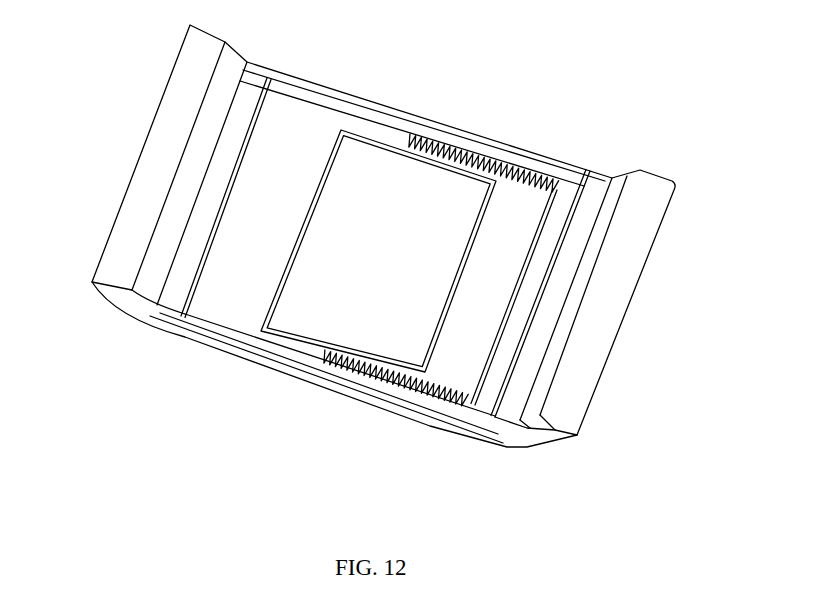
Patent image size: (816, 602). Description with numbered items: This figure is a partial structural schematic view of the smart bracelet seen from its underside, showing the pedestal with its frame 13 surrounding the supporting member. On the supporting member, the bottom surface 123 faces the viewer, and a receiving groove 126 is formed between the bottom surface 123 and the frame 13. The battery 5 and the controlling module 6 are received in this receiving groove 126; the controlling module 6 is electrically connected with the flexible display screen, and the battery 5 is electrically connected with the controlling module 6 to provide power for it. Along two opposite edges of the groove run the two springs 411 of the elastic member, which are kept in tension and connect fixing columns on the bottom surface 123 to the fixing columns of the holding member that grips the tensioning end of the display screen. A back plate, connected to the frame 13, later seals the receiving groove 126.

The battery 5 is at (377, 165).
The controlling module 6 is at (295, 127).
The frame 13 is at (378, 383).
The bottom surface 123 is at (297, 343).
The receiving groove 126 is at (463, 335).
The spring 411 is at (485, 150).